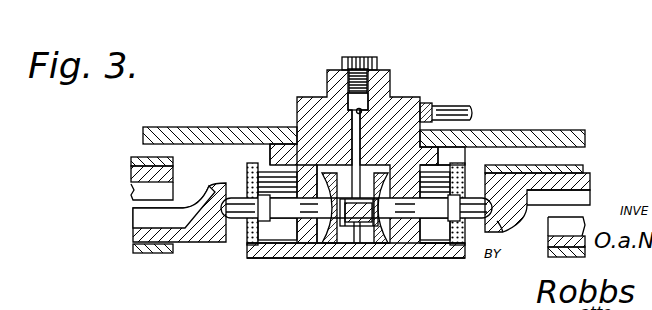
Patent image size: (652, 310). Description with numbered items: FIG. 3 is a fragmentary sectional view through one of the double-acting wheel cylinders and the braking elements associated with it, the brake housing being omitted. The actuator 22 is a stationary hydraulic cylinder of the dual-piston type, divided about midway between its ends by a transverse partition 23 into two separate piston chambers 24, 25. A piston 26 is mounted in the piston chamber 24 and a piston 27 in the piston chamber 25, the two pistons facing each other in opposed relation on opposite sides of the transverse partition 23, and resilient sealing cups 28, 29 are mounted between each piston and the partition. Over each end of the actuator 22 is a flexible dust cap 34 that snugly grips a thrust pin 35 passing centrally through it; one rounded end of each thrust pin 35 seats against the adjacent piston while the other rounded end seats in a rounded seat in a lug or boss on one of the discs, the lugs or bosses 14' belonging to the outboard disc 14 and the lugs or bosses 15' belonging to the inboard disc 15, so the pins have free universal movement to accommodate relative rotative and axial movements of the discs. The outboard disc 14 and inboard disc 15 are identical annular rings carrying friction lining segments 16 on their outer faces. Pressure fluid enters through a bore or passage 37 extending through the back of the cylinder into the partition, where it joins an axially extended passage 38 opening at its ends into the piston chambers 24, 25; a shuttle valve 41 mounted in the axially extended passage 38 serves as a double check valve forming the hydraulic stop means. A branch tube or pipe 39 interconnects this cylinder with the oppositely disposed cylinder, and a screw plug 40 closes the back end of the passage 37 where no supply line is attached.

The outboard disc 14 is at (338, 206).
The lugs or bosses of disc 14 14' is at (179, 232).
The inboard disc 15 is at (559, 201).
The lugs or bosses of disc 15 15' is at (519, 234).
The friction lining segments 16 is at (133, 249).
The actuator 22 is at (302, 252).
The transverse partition 23 is at (365, 230).
The piston chamber 24 is at (273, 235).
The piston chamber 25 is at (443, 241).
The piston 26 is at (266, 165).
The piston 27 is at (448, 162).
The resilient sealing cup 28 is at (326, 178).
The resilient sealing cup 29 is at (393, 176).
The dust cap 34 is at (251, 248).
The thrust pin 35 is at (237, 200).
The bore or passage 37 is at (345, 142).
The axially extended passage 38 is at (355, 238).
The branch tube or pipe 39 is at (458, 108).
The screw plug 40 is at (373, 66).
The shuttle valve 41 is at (382, 238).